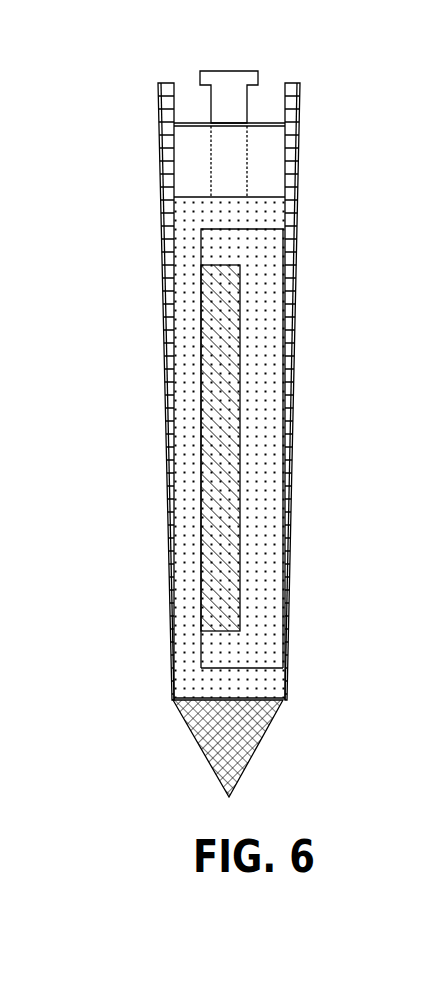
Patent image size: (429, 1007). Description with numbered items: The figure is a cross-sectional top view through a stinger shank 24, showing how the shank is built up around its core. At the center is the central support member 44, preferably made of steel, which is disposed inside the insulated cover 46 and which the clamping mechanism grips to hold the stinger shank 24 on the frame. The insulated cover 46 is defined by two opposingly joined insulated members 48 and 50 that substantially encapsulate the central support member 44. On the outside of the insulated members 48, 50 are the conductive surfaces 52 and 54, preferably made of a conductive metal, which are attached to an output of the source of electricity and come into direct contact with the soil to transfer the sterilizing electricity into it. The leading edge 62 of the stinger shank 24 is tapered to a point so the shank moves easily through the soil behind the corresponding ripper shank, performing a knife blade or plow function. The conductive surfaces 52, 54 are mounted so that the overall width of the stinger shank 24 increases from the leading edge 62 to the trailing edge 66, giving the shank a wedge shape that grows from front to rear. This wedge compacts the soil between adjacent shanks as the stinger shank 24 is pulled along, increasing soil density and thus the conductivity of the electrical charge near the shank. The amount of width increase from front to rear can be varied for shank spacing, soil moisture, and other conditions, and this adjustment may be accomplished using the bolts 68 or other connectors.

The stinger shank 24 is at (329, 191).
The central support member 44 is at (216, 372).
The insulated cover 46 is at (266, 634).
The insulated member 48 is at (185, 579).
The insulated member 50 is at (272, 388).
The conductive surface 52 is at (173, 428).
The conductive surface 54 is at (283, 250).
The leading edge 62 is at (170, 735).
The trailing edge 66 is at (141, 95).
The bolt 68 is at (232, 70).